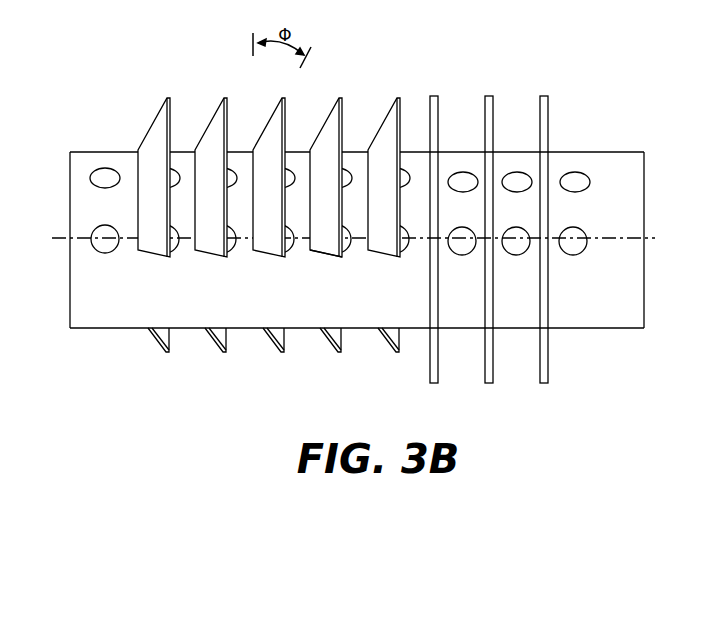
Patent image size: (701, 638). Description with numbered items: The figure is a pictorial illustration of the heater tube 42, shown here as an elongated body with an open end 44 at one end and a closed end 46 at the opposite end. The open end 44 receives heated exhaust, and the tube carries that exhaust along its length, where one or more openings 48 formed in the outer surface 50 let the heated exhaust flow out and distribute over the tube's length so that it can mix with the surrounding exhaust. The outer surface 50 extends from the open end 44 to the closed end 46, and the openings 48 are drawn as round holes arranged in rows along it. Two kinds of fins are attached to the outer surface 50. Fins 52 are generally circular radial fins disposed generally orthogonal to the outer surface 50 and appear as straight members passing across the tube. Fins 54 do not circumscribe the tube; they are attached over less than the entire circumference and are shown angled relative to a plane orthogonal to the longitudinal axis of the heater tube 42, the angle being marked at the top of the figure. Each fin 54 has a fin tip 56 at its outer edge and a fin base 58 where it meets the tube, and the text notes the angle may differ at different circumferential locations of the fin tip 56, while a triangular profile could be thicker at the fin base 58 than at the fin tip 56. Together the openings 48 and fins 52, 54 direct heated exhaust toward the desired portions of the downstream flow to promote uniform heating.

The heater tube 42 is at (618, 153).
The open end 44 is at (643, 307).
The closed end 46 is at (70, 305).
The openings 48 is at (102, 178).
The outer surface 50 is at (90, 306).
The fins 52 is at (542, 95).
The fins 54 is at (279, 354).
The fin tip 56 is at (340, 98).
The fin base 58 is at (320, 255).